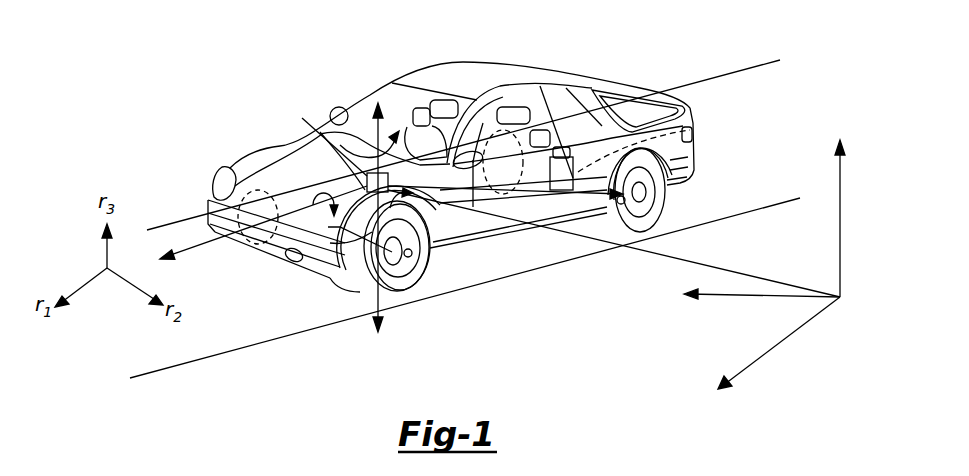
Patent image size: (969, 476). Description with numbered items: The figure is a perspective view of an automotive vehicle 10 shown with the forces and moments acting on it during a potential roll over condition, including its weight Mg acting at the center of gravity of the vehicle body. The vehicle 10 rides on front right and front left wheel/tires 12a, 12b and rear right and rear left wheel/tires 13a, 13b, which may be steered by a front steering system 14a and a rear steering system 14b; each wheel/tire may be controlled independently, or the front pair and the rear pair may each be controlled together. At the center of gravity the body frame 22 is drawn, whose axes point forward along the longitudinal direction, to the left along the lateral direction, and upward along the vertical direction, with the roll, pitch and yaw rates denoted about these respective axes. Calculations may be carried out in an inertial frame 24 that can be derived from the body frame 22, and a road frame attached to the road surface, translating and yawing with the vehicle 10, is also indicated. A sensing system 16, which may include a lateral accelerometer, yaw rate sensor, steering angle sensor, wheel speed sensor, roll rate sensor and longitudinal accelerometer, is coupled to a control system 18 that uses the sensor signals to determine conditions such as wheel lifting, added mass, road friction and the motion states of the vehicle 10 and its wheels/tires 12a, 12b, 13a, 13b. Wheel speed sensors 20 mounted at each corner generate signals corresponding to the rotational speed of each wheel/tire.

The automotive vehicle 10 is at (478, 72).
The front right wheel/tire 12a is at (245, 188).
The front left wheel/tire 12b is at (402, 292).
The rear right wheel/tire 13a is at (505, 125).
The rear left wheel/tire 13b is at (672, 212).
The front steering system 14a is at (332, 243).
The rear steering system 14b is at (690, 130).
The sensing system 16 is at (370, 173).
The control system 18 is at (560, 157).
The wheel speed sensors 20 is at (617, 197).
The body frame 22 is at (190, 248).
The inertial frame 24 is at (845, 297).